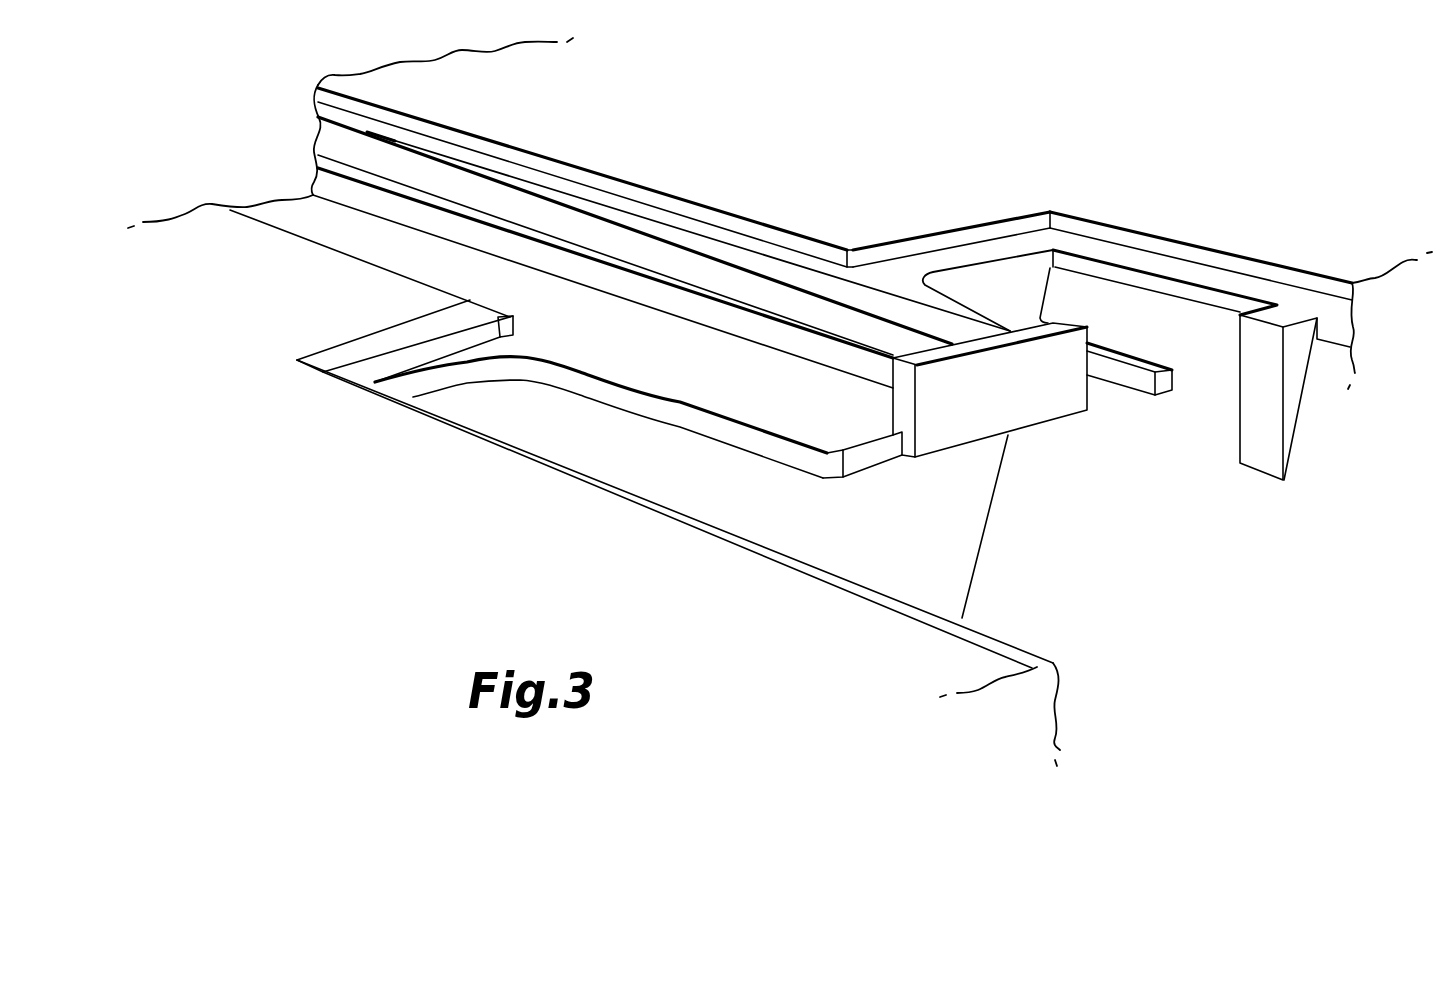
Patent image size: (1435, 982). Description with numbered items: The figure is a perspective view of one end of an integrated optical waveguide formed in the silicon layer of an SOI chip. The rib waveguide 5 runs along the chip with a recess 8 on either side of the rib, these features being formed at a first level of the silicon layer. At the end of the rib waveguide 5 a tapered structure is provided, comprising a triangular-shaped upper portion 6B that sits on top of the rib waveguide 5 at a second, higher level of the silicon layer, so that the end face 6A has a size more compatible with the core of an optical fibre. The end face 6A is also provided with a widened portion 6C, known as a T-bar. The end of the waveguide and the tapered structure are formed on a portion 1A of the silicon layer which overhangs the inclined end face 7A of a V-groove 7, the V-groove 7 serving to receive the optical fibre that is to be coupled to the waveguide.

The overhanging portion of the silicon layer 1A is at (747, 370).
The rib waveguide 5 is at (328, 163).
The end face 6A is at (1043, 407).
The triangular-shaped upper portion 6B is at (892, 308).
The widened portion (T-bar) 6C is at (1060, 324).
The V-groove 7 is at (1093, 570).
The inclined end face of the V-groove 7A is at (510, 413).
The recess 8 is at (367, 243).